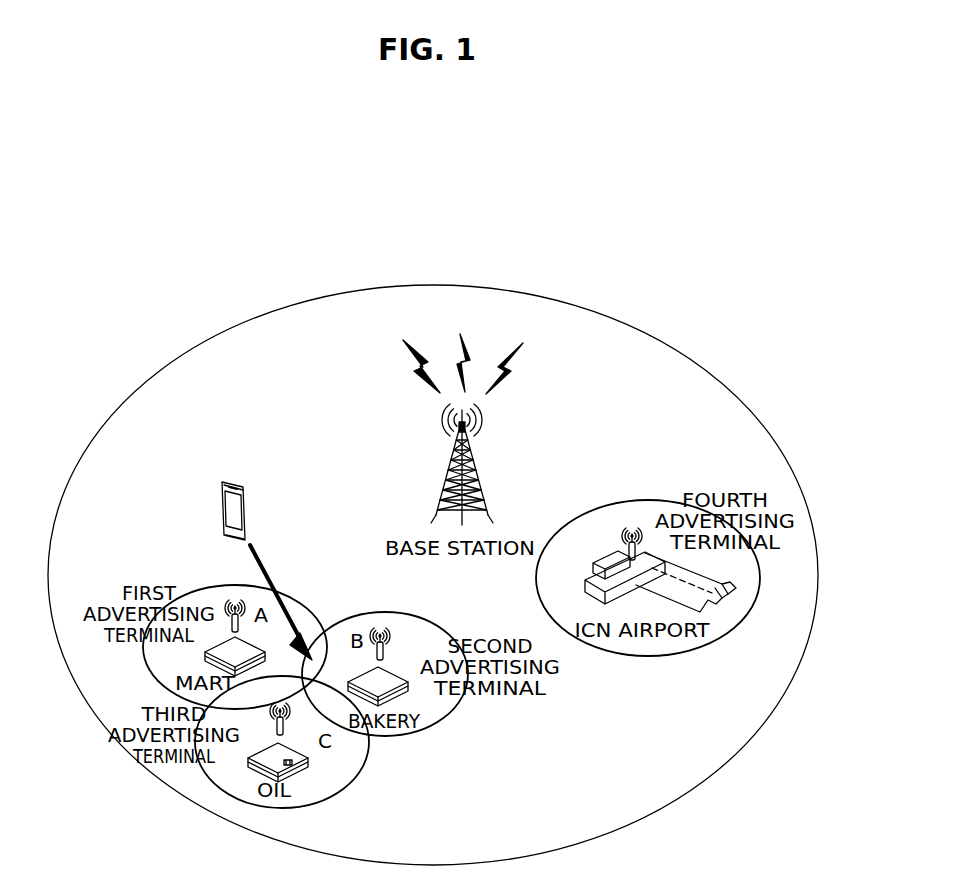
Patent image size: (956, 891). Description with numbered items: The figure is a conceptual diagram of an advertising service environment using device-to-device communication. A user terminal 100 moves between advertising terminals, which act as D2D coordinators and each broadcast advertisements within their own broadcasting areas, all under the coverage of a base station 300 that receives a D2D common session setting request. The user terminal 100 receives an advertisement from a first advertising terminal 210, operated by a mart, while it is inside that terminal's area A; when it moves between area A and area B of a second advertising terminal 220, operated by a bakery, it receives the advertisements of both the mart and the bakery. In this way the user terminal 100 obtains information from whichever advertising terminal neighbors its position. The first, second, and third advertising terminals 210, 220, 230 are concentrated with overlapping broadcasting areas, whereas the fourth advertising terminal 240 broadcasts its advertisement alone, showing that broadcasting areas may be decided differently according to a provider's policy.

The user terminal 100 is at (226, 479).
The first advertising terminal 210 is at (228, 600).
The second advertising terminal 220 is at (380, 634).
The third advertising terminal 230 is at (292, 712).
The fourth advertising terminal 240 is at (630, 532).
The base station 300 is at (468, 440).